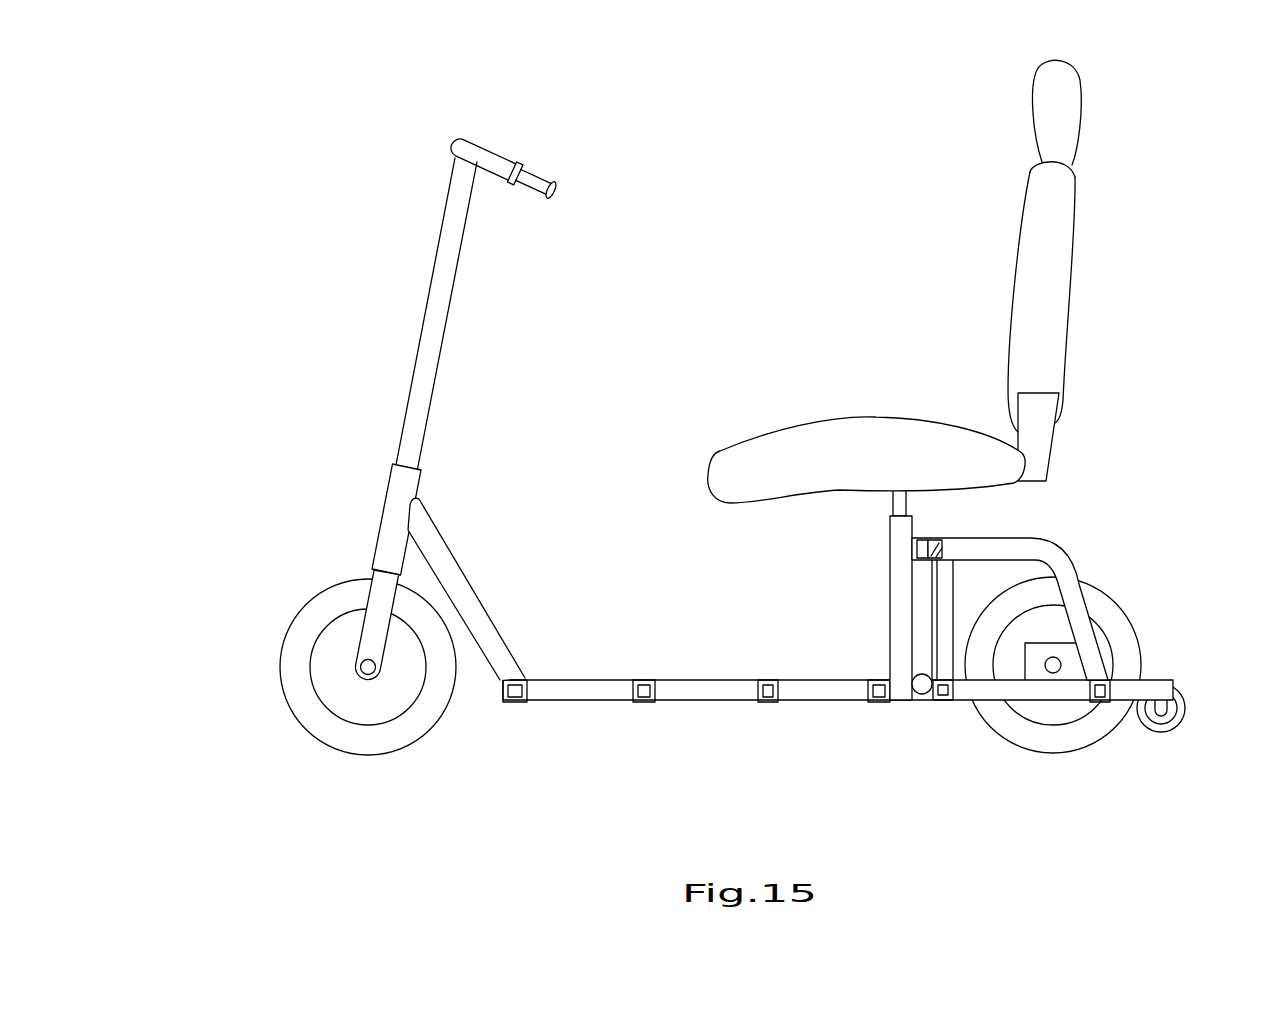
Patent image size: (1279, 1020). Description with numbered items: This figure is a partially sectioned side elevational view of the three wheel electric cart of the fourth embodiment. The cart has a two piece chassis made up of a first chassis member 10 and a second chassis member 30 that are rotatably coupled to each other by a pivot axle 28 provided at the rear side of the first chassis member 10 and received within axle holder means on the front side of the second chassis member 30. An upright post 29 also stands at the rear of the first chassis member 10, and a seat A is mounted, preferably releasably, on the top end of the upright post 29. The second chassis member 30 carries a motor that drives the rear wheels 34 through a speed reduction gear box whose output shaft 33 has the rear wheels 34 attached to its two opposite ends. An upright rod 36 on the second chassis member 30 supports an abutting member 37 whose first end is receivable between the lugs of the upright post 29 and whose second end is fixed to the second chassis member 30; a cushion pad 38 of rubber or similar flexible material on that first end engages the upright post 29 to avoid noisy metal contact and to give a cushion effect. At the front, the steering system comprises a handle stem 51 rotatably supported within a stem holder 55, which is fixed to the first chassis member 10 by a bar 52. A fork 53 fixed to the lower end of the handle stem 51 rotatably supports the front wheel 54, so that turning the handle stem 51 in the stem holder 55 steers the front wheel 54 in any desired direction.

The first chassis member 10 is at (570, 692).
The pivot axle 28 is at (922, 688).
The upright post 29 is at (900, 588).
The second chassis member 30 is at (1160, 692).
The output shaft 33 is at (1060, 672).
The rear wheels 34 is at (1117, 617).
The upright rod 36 is at (943, 655).
The abutting member 37 is at (1047, 552).
The cushion pad 38 is at (917, 537).
The handle stem 51 is at (440, 317).
The bar 52 is at (462, 602).
The fork 53 is at (380, 623).
The front wheel 54 is at (332, 728).
The stem holder 55 is at (392, 518).
The seat A is at (1046, 266).